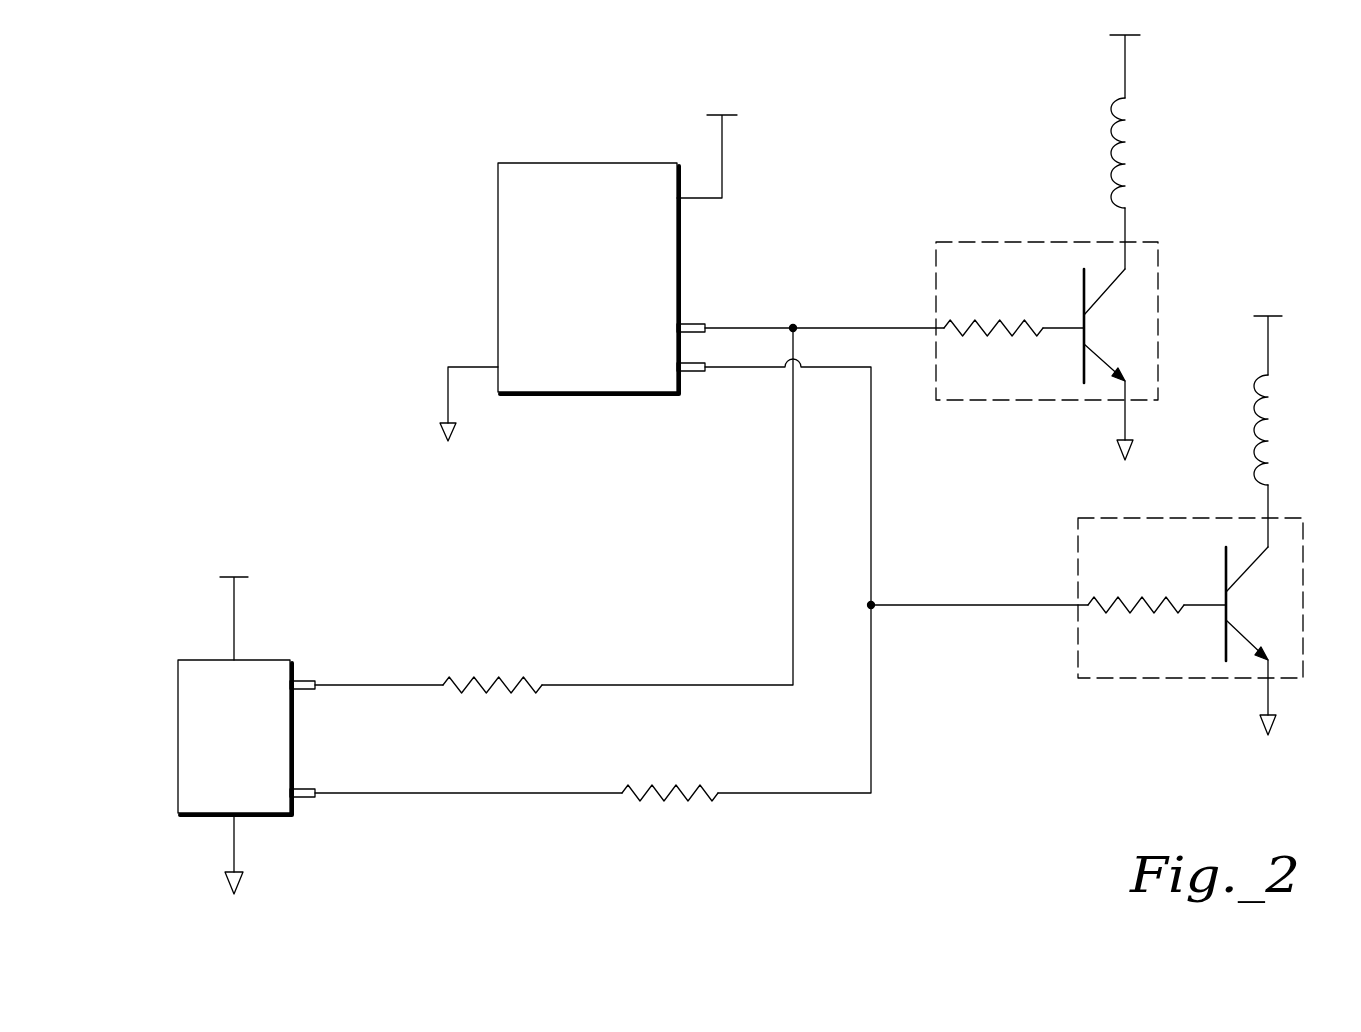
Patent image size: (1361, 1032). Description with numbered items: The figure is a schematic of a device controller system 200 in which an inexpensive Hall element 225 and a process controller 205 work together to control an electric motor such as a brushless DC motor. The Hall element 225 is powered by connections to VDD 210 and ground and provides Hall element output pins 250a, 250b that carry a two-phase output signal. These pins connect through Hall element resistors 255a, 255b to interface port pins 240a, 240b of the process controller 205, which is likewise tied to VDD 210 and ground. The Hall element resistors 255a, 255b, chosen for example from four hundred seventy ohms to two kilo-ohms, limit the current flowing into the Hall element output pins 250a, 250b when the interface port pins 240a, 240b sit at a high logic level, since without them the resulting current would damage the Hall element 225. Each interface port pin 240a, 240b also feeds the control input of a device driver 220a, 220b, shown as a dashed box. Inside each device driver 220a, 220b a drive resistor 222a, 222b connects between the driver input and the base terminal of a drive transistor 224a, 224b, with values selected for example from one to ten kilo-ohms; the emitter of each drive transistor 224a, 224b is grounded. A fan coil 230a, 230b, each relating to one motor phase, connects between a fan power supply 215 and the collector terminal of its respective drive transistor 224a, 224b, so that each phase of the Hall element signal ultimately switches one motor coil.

The device controller system 200 is at (376, 92).
The process controller 205 is at (497, 178).
The VDD 210 is at (723, 150).
The fan power supply 215 is at (1127, 75).
The device driver 220a is at (952, 402).
The device driver 220b is at (1097, 680).
The drive resistor 222a is at (972, 320).
The drive resistor 222b is at (1115, 598).
The drive transistor 224a is at (1088, 316).
The drive transistor 224b is at (1229, 594).
The Hall element 225 is at (177, 675).
The fan coil 230a is at (1128, 142).
The fan coil 230b is at (1270, 422).
The interface port pin 240a is at (697, 323).
The interface port pin 240b is at (694, 373).
The Hall element output pin 250a is at (310, 681).
The Hall element output pin 250b is at (310, 798).
The Hall element resistor 255a is at (470, 680).
The Hall element resistor 255b is at (677, 800).